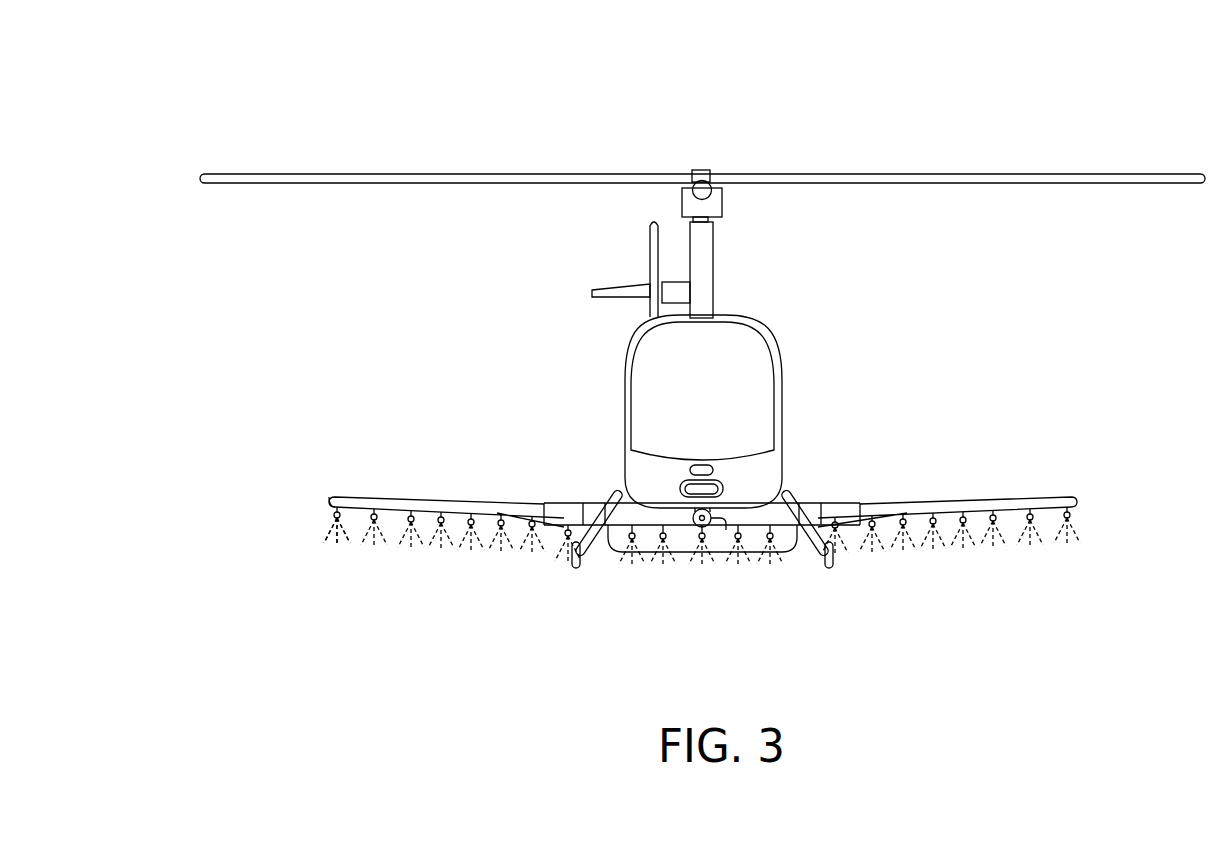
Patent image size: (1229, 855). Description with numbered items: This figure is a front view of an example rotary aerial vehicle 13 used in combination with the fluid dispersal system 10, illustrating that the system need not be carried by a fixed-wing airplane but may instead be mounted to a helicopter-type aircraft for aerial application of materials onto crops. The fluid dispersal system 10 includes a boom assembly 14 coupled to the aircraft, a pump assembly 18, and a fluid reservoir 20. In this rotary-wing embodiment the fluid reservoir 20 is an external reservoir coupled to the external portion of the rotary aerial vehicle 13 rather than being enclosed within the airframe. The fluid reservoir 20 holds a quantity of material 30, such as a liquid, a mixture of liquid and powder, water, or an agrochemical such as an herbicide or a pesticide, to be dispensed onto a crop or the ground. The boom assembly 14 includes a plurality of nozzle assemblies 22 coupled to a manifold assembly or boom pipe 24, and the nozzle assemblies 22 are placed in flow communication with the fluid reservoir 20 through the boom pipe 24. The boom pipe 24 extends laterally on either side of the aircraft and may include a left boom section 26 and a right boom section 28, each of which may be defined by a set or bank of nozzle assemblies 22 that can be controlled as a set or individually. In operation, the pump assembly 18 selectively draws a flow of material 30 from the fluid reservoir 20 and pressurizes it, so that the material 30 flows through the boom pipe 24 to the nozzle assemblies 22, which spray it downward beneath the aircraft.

The fluid dispersal system 10 is at (907, 472).
The rotary aerial vehicle 13 is at (727, 143).
The boom assembly 14 is at (1055, 492).
The pump assembly 18 is at (605, 500).
The fluid reservoir 20 is at (783, 488).
The nozzle assemblies 22 is at (327, 502).
The boom pipe 24 is at (338, 497).
The left boom section 26 is at (978, 580).
The right boom section 28 is at (368, 565).
The material 30 is at (327, 532).